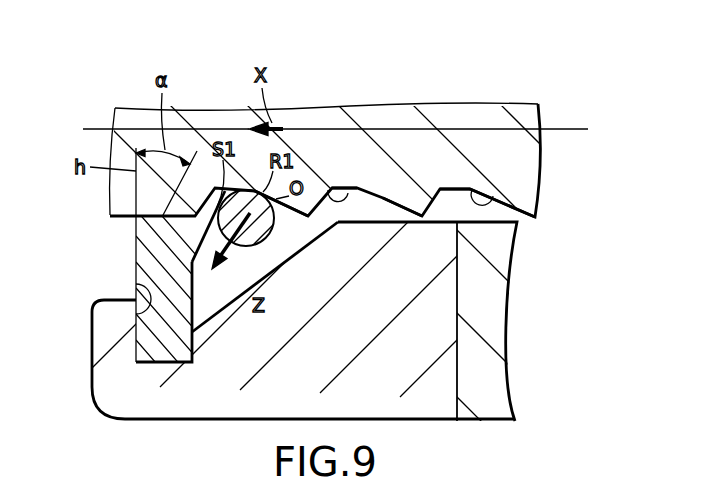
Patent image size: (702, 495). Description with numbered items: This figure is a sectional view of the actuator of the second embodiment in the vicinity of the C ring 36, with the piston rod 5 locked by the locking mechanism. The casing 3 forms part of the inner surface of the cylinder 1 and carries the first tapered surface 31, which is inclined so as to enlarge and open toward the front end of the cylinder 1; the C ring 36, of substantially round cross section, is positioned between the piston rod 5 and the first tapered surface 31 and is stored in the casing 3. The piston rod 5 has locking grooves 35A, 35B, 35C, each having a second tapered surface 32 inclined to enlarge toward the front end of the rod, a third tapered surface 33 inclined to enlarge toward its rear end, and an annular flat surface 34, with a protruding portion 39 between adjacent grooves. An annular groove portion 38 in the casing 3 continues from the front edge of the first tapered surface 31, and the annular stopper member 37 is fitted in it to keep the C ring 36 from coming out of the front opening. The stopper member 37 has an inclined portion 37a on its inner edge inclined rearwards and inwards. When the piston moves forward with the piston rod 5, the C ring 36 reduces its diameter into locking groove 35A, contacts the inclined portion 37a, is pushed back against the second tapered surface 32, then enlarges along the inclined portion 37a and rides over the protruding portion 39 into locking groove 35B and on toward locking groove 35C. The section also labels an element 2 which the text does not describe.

The cylinder 1 is at (331, 293).
The core metal 2 is at (552, 288).
The casing 3 is at (440, 300).
The piston rod 5 is at (522, 157).
The first tapered surface 31 is at (207, 318).
The second tapered surface 32 is at (200, 205).
The third tapered surface 33 is at (383, 193).
The annular flat surface 34 is at (450, 188).
The locking groove 35A is at (287, 203).
The locking groove 35B is at (345, 188).
The locking groove 35C is at (474, 189).
The C ring 36 is at (263, 247).
The stopper member 37 is at (137, 350).
The inclined portion 37a is at (160, 233).
The groove portion 38 is at (150, 297).
The protruding portion 39 is at (522, 202).